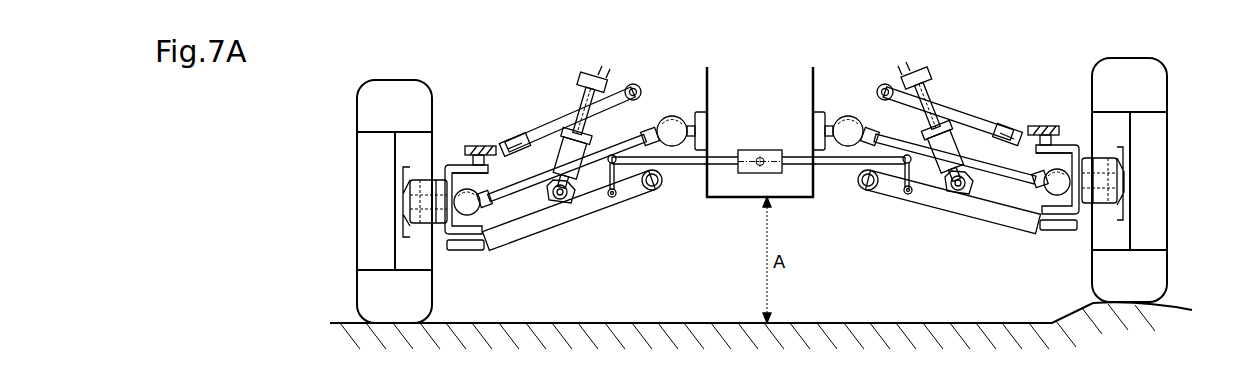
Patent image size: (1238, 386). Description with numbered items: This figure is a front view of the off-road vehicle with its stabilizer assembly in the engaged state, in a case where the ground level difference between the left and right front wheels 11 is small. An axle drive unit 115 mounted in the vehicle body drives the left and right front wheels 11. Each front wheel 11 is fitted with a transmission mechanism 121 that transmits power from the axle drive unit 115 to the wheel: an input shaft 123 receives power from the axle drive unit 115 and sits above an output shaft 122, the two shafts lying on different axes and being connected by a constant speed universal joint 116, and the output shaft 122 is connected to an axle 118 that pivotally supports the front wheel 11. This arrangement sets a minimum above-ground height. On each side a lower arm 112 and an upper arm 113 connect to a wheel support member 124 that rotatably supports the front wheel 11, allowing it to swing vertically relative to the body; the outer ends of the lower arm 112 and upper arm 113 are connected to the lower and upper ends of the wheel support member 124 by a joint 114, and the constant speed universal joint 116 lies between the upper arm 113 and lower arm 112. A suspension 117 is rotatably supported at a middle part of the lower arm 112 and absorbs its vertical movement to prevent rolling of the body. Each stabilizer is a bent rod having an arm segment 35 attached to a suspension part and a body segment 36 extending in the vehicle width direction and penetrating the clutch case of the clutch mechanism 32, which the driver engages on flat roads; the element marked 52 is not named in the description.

The front wheel 11 is at (398, 312).
The clutch mechanism 32 is at (742, 143).
The arm segment 35 is at (615, 165).
The body segment 36 is at (683, 162).
The control unit 52 is at (770, 148).
The lower arm 112 is at (555, 217).
The upper arm 113 is at (530, 134).
The joint 114 is at (488, 146).
The axle drive unit 115 is at (717, 198).
The constant speed universal joint 116 is at (513, 190).
The suspension 117 is at (585, 85).
The axle 118 is at (408, 238).
The transmission mechanism 121 is at (660, 100).
The output shaft 122 is at (440, 167).
The input shaft 123 is at (684, 117).
The wheel support member 124 is at (450, 164).